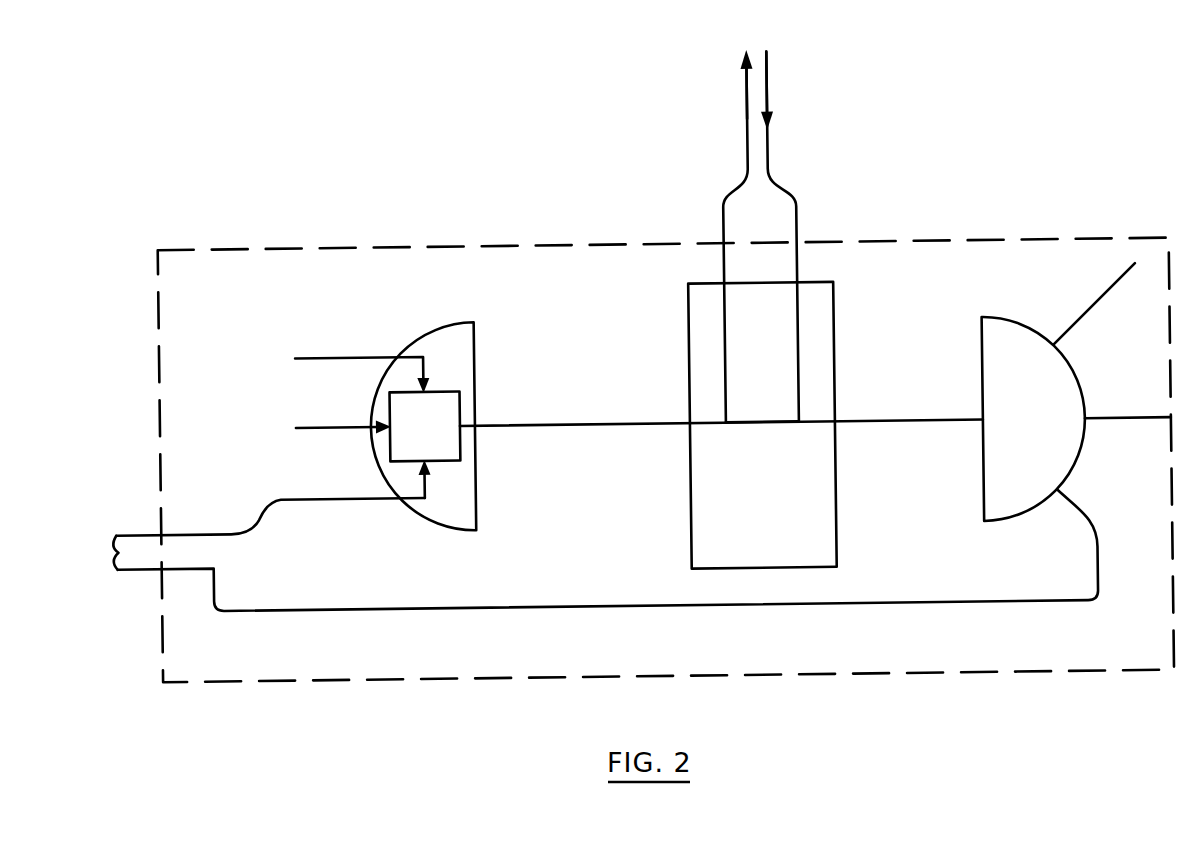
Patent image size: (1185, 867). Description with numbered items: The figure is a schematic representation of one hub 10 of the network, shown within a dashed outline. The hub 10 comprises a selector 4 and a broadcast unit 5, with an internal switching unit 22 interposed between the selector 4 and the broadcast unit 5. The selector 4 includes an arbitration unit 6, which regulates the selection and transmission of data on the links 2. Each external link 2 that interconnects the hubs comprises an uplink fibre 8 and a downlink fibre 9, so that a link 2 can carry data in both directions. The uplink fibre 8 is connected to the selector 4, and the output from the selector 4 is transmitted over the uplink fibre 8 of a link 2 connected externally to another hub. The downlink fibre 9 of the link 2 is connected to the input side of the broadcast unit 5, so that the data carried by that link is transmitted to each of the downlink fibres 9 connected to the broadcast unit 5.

The external link 2 is at (779, 89).
The selector 4 is at (477, 348).
The broadcast unit 5 is at (984, 369).
The arbitration unit 6 is at (378, 428).
The uplink fibre 8 is at (266, 506).
The downlink fibre 9 is at (383, 605).
The hub 10 is at (430, 239).
The internal switching unit 22 is at (691, 320).